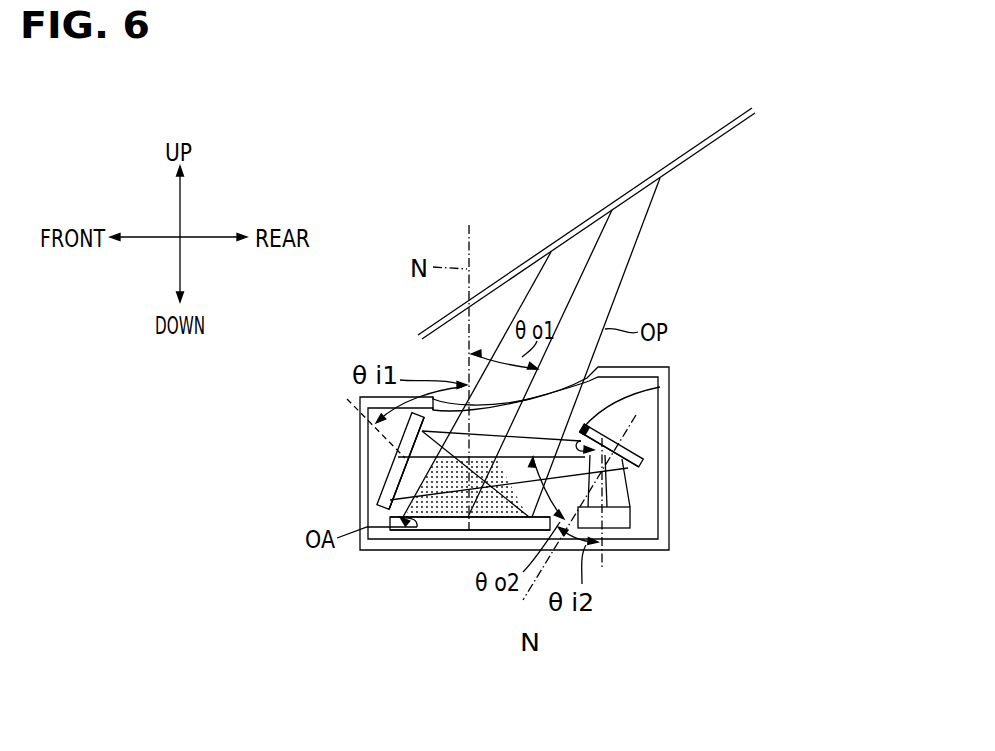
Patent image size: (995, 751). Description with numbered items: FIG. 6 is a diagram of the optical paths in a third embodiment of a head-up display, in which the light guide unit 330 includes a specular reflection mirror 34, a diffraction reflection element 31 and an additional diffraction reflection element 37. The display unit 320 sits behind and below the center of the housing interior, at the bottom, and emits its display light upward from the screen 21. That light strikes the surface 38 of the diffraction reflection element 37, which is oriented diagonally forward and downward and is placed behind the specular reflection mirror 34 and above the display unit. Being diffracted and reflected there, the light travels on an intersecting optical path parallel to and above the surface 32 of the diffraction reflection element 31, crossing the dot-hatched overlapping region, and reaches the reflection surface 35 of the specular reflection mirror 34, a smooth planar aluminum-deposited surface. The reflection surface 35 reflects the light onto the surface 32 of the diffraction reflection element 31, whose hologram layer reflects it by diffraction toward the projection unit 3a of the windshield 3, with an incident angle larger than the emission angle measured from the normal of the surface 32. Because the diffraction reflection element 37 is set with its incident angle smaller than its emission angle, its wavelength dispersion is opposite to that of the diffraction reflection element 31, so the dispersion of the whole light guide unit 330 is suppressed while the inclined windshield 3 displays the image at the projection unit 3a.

The windshield 3 is at (704, 141).
The projection unit 3a is at (641, 199).
The screen 21 is at (626, 501).
The diffraction reflection element 31 is at (422, 530).
The surface 32 is at (456, 514).
The specular reflection mirror 34 is at (386, 482).
The reflection surface 35 is at (401, 487).
The diffraction reflection element 37 is at (646, 448).
The surface 38 is at (660, 387).
The display unit 320 is at (632, 522).
The light guide unit 330 is at (514, 467).